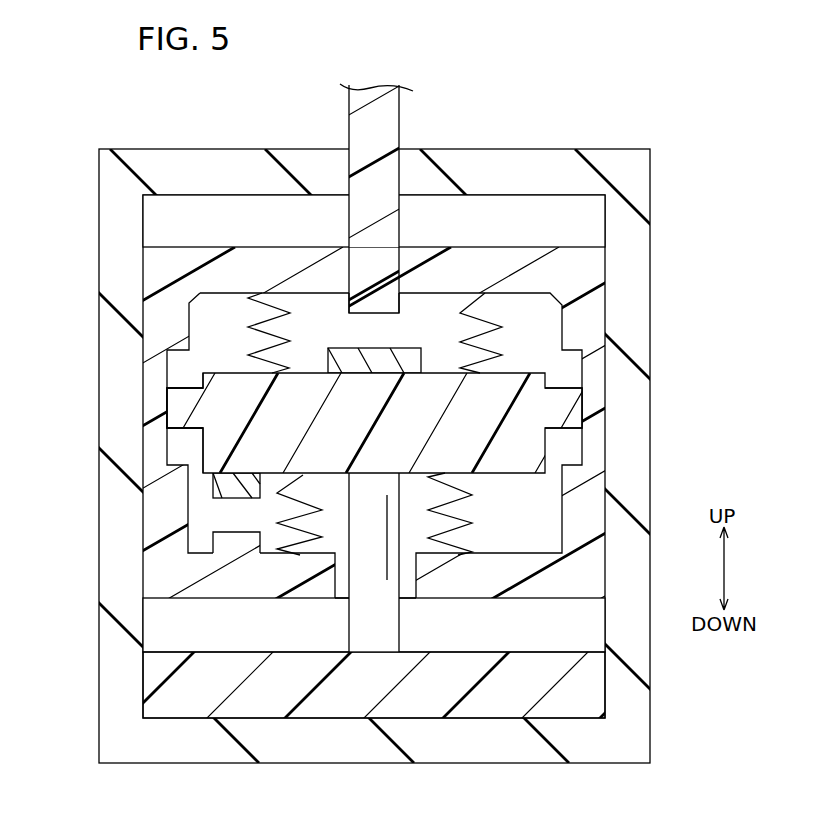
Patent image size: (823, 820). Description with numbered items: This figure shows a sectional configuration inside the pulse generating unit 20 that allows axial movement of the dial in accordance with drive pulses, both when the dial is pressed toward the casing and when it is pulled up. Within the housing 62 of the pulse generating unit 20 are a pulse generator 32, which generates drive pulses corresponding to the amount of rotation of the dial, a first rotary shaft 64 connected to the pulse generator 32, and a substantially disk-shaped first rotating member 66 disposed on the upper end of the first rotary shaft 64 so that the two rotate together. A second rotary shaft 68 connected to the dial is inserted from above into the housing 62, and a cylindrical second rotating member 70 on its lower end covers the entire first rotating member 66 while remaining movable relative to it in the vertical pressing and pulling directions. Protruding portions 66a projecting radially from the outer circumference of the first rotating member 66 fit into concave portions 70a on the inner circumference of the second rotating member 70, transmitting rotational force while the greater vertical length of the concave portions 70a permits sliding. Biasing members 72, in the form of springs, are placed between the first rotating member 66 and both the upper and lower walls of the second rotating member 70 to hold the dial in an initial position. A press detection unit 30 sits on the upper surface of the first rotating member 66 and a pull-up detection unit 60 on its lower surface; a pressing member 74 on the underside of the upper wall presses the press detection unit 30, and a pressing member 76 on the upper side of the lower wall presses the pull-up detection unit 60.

The pulse generating unit 20 is at (657, 305).
The press detection unit 30 is at (357, 357).
The pulse generator 32 is at (243, 665).
The pull-up detection unit 60 is at (212, 493).
The housing 62 is at (630, 239).
The first rotary shaft 64 is at (385, 625).
The first rotating member 66 is at (228, 387).
The protruding portion 66a is at (185, 409).
The second rotary shaft 68 is at (362, 122).
The second rotating member 70 is at (374, 339).
The concave portion 70a is at (189, 448).
The biasing member 72 is at (258, 338).
The pressing member 74 is at (381, 303).
The pressing member 76 is at (230, 542).